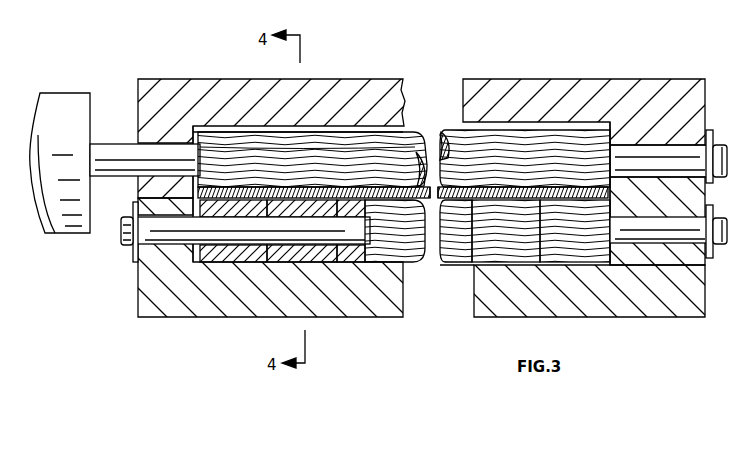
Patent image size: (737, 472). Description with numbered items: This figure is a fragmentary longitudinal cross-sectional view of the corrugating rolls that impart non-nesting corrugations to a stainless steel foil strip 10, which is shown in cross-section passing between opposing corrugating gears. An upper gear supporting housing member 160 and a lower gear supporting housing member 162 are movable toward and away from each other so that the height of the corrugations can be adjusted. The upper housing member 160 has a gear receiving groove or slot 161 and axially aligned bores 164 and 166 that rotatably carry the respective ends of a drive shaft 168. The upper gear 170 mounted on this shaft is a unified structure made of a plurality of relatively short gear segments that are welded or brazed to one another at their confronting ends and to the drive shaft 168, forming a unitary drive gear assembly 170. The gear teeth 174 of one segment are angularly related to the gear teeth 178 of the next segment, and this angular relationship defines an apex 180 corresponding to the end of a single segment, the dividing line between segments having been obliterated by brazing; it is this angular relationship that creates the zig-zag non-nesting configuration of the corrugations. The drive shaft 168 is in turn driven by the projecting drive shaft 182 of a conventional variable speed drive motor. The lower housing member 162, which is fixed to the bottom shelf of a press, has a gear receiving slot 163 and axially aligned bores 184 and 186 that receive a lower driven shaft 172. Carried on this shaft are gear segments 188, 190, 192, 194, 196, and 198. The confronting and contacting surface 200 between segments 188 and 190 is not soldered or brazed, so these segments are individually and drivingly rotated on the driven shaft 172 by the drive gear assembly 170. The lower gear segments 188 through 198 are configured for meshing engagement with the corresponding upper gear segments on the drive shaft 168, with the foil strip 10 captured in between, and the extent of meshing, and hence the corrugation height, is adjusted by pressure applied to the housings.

The foil strip 10 is at (436, 205).
The upper gear supporting housing member 160 is at (600, 102).
The gear receiving groove or slot 161 is at (365, 128).
The lower gear supporting housing member 162 is at (698, 280).
The gear receiving slot 163 is at (635, 250).
The bore 164 is at (677, 153).
The bore 166 is at (140, 148).
The drive shaft 168 is at (653, 160).
The upper gear 170 is at (518, 148).
The lower driven shaft 172 is at (123, 238).
The gear teeth 174 is at (228, 147).
The gear teeth 178 is at (293, 153).
The apex 180 is at (265, 137).
The projecting drive shaft 182 is at (53, 112).
The bore 184 is at (162, 245).
The bore 186 is at (672, 285).
The gear segment 188 is at (232, 258).
The gear segment 190 is at (325, 252).
The gear segment 192 is at (367, 248).
The gear segment 194 is at (470, 265).
The gear segment 196 is at (495, 262).
The gear segment 198 is at (577, 250).
The confronting and contacting surface 200 is at (277, 248).